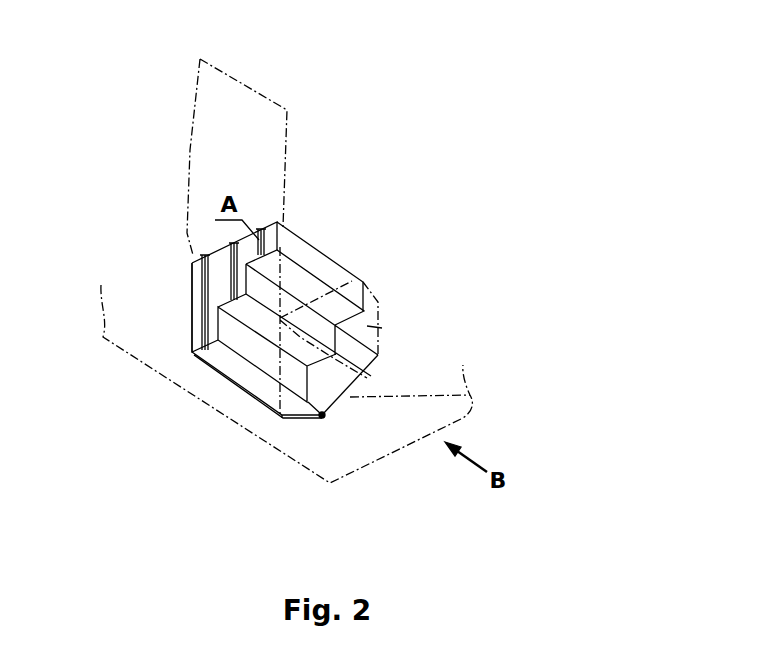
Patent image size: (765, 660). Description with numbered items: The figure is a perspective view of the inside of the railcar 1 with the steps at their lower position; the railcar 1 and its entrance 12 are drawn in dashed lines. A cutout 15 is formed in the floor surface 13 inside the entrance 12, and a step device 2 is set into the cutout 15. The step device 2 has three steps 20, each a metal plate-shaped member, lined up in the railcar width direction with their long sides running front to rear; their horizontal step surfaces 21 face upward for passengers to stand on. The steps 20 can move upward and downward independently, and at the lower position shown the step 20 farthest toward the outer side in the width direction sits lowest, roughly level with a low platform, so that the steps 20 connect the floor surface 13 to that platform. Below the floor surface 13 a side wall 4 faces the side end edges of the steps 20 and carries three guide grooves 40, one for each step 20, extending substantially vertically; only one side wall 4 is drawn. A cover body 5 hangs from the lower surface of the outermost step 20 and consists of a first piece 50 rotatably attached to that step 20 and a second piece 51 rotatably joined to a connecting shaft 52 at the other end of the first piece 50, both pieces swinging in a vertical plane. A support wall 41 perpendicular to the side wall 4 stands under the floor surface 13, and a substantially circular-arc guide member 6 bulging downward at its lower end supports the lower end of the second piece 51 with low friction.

The railcar 1 is at (488, 172).
The step device 2 is at (405, 327).
The side wall 4 is at (218, 262).
The cover body 5 is at (150, 527).
The guide member 6 is at (470, 395).
The entrance 12 is at (252, 92).
The floor surface 13 is at (189, 259).
The cutout 15 is at (296, 238).
The step 20 is at (340, 307).
The step surface 21 is at (302, 283).
The guide groove 40 is at (270, 226).
The support wall 41 is at (380, 327).
The first piece 50 is at (312, 416).
The second piece 51 is at (346, 403).
The connecting shaft 52 is at (347, 419).